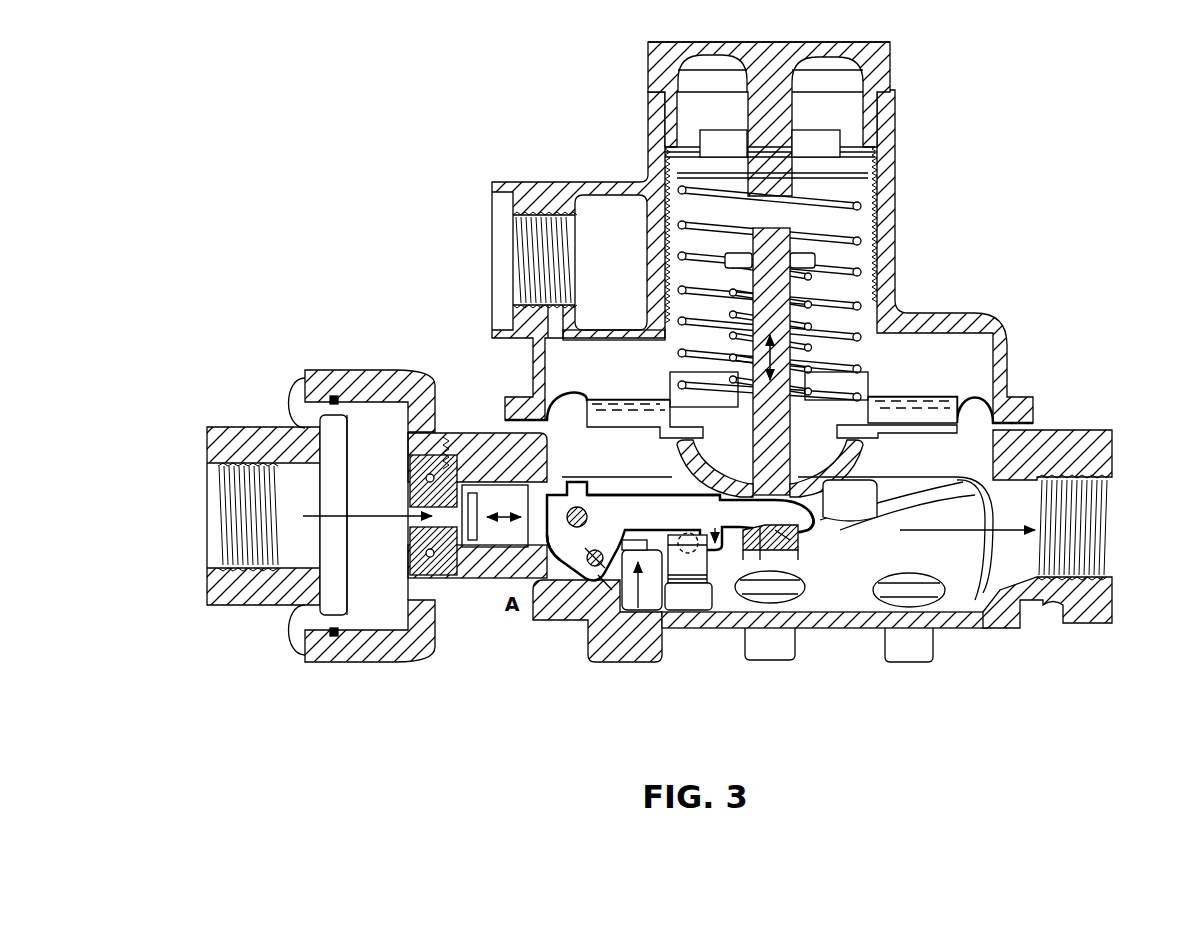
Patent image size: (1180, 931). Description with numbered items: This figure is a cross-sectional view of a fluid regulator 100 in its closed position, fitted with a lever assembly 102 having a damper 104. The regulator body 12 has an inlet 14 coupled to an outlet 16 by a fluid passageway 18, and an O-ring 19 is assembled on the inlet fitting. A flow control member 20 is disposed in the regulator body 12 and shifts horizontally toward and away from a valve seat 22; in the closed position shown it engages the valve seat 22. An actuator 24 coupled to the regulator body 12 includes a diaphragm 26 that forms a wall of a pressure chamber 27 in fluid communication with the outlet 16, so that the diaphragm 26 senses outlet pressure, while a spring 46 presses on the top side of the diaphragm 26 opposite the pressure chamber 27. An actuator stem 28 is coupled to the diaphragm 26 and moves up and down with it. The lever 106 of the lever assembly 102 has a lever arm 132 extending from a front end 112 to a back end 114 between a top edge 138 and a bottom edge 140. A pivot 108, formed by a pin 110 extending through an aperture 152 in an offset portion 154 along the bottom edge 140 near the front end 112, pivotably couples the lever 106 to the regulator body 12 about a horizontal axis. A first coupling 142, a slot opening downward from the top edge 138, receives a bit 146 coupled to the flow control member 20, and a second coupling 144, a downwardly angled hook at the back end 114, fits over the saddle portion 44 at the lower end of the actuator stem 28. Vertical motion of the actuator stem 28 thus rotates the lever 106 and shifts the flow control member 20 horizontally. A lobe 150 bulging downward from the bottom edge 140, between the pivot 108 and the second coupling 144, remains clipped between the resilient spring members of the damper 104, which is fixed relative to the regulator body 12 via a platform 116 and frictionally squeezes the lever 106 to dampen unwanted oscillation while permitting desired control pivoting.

The fluid regulator 100 is at (958, 50).
The actuator 24 is at (897, 167).
The spring 46 is at (860, 237).
The actuator stem 28 is at (795, 285).
The diaphragm 26 is at (973, 393).
The pressure chamber 27 is at (873, 484).
The outlet 16 is at (1112, 516).
The inlet 14 is at (207, 508).
The fluid passageway 18 is at (373, 517).
The O-ring 19 is at (334, 638).
The valve seat 22 is at (448, 545).
The flow control member 20 is at (480, 545).
The front end 112 is at (513, 490).
The pin 110 is at (578, 570).
The bit 146 is at (573, 510).
The first coupling 142 is at (545, 492).
The top edge 138 is at (633, 493).
The pivot 108 is at (592, 568).
The aperture 152 is at (593, 575).
The offset portion 154 is at (603, 578).
The lever assembly 102 is at (638, 588).
The damper 104 is at (688, 565).
The lobe 150 is at (680, 556).
The platform 116 is at (712, 550).
The bottom edge 140 is at (731, 545).
The second coupling 144 is at (805, 535).
The lever arm 132 is at (748, 580).
The lever 106 is at (767, 556).
The saddle portion 44 is at (781, 545).
The back end 114 is at (800, 522).
The regulator body 12 is at (973, 617).